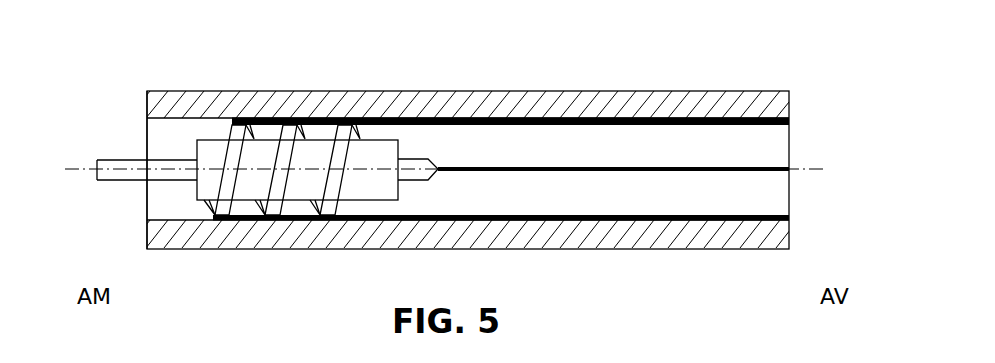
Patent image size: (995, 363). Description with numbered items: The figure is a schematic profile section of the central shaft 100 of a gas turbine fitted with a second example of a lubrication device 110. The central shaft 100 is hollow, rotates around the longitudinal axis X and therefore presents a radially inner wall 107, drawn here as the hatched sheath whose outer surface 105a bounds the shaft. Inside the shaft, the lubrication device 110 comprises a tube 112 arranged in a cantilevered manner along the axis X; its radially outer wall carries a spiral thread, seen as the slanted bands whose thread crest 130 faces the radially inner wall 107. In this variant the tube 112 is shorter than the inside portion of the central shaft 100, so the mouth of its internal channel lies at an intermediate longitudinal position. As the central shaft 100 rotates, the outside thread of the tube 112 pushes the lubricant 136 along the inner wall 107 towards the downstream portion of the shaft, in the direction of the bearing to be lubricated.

The lubrication device 110 is at (123, 122).
The sheath wall 105a is at (707, 92).
The central shaft 100 is at (250, 103).
The tube 112 is at (207, 150).
The thread crest 130 is at (350, 127).
The lubricant 136 is at (242, 222).
The radially inner wall 107 is at (603, 225).
The longitudinal axis X is at (81, 173).